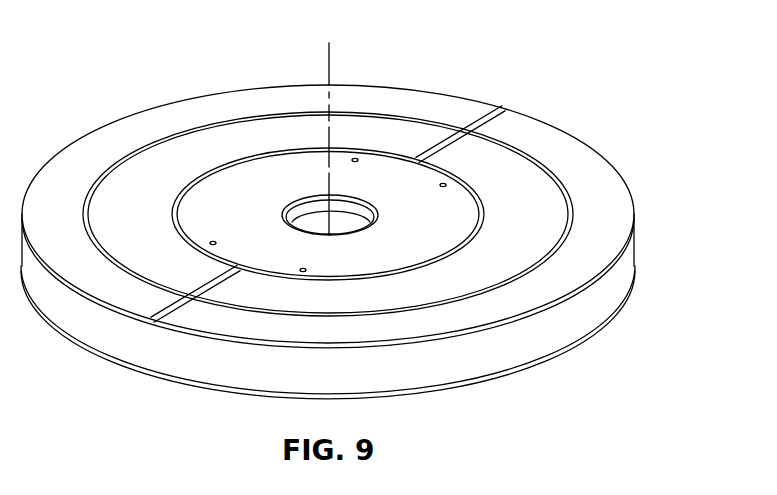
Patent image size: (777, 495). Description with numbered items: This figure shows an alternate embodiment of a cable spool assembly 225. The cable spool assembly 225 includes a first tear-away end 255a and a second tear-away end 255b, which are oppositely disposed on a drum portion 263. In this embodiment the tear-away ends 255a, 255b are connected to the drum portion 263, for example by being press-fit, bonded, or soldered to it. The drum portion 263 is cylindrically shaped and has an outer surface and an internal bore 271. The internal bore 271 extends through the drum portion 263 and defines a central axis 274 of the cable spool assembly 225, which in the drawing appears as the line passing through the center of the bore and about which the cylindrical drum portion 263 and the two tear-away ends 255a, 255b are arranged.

The cable spool assembly 225 is at (662, 219).
The first tear-away end 255a is at (577, 153).
The second tear-away end 255b is at (579, 344).
The drum portion 263 is at (343, 200).
The internal bore 271 is at (297, 217).
The central axis 274 is at (329, 46).